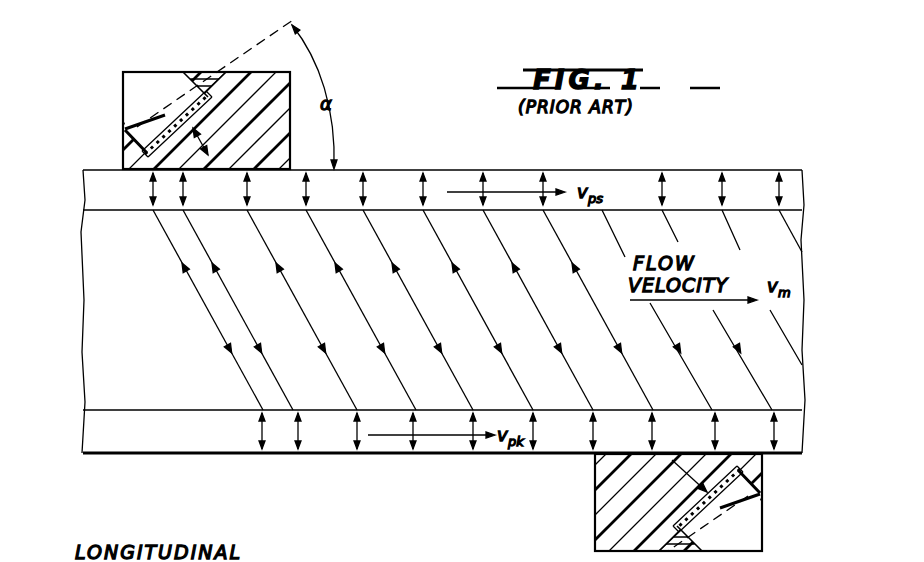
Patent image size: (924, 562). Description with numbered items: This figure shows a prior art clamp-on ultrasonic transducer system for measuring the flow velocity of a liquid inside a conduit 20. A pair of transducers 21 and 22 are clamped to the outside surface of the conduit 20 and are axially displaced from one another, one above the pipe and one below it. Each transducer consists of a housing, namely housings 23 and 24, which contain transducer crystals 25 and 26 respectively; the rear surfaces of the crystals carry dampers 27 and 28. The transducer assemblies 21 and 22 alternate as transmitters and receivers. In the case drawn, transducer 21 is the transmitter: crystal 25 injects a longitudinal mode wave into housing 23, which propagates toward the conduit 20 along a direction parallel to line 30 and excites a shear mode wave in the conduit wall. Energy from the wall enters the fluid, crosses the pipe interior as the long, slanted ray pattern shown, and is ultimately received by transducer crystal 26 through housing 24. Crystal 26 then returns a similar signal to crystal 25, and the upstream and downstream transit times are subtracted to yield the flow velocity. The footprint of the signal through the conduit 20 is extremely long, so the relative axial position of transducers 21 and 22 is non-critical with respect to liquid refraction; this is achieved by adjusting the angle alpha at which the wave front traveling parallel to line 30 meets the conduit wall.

The conduit 20 is at (442, 170).
The transducer 21 is at (202, 113).
The transducer 22 is at (662, 502).
The housing 23 is at (290, 131).
The housing 24 is at (605, 512).
The transducer crystal 25 is at (209, 92).
The transducer crystal 26 is at (760, 463).
The damper 27 is at (143, 123).
The damper 28 is at (749, 502).
The line 30 is at (200, 142).